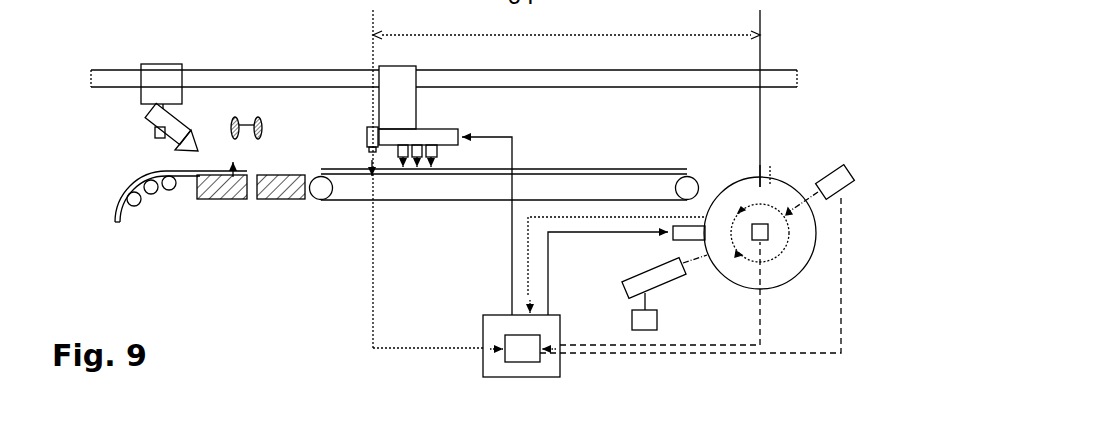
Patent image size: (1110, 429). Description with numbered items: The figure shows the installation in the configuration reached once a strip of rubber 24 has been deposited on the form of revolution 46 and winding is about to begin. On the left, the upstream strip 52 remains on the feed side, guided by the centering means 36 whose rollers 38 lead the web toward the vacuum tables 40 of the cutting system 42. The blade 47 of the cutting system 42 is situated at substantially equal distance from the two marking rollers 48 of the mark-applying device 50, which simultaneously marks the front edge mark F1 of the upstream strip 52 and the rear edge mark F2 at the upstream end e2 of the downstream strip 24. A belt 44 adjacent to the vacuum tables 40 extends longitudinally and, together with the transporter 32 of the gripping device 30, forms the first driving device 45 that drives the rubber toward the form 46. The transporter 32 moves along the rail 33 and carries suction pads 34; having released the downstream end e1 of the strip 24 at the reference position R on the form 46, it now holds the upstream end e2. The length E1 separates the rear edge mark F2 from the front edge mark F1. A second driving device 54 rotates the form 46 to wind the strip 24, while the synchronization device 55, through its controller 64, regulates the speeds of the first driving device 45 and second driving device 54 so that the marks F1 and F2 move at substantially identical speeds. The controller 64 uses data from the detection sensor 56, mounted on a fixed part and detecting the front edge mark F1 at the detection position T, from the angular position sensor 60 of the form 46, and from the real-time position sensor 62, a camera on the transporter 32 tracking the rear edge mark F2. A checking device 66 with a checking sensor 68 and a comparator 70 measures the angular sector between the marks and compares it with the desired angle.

The strip of rubber 24 is at (558, 171).
The gripping device 30 is at (444, 154).
The transporter 32 is at (402, 117).
The rail 33 is at (307, 83).
The suction pads 34 is at (428, 170).
The centering means 36 is at (127, 222).
The rollers 38 is at (153, 194).
The vacuum tables 40 is at (267, 200).
The cutting system 42 is at (125, 106).
The belt 44 is at (402, 200).
The first driving device 45 is at (368, 103).
The form of revolution 46 is at (779, 275).
The blade 47 is at (174, 148).
The marking rollers 48 is at (258, 117).
The mark-applying device 50 is at (222, 115).
The upstream strip 52 is at (117, 202).
The second driving device 54 is at (677, 241).
The synchronization device 55 is at (548, 378).
The detection sensor 56 is at (835, 170).
The angular position sensor 60 is at (768, 237).
The real-time position sensor 62 is at (367, 133).
The controller 64 is at (517, 352).
The checking device 66 is at (667, 292).
The checking sensor 68 is at (630, 272).
The comparator 70 is at (632, 317).
The length of the strip E1 is at (566, 179).
The downstream end of the web e1 is at (772, 172).
The upstream end of the strip e2 is at (337, 201).
The front edge mark F1 is at (213, 199).
The rear edge mark F2 is at (367, 155).
The reference position R is at (769, 161).
The detection position T is at (805, 207).